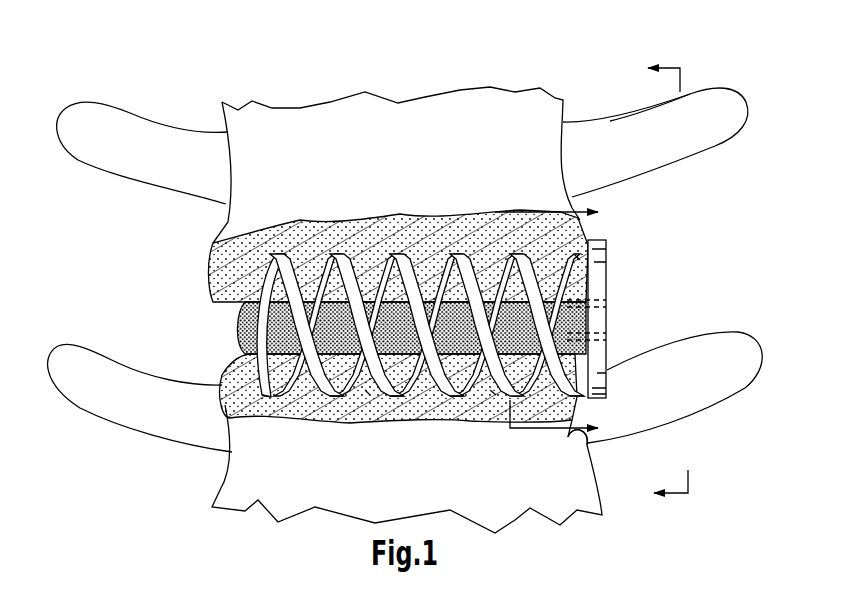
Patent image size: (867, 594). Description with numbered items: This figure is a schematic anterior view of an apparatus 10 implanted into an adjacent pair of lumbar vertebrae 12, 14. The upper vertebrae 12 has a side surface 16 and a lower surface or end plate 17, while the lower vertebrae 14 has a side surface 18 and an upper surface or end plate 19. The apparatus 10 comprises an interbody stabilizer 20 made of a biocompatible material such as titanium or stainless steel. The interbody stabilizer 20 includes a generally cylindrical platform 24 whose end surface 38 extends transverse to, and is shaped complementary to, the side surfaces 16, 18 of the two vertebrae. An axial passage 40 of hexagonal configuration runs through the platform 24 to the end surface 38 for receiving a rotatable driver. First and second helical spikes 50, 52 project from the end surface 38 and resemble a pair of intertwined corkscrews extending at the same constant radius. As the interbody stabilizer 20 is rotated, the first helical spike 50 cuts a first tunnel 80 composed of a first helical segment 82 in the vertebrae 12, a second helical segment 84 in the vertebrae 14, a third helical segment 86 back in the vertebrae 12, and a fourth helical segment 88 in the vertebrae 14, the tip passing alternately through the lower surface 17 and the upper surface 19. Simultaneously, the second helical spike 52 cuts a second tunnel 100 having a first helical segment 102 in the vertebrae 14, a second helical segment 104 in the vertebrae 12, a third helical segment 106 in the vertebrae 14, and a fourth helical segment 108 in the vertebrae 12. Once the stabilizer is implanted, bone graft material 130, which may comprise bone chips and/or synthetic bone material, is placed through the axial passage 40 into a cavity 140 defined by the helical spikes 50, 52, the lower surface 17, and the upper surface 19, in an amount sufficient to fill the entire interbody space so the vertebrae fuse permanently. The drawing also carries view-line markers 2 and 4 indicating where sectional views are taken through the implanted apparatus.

The apparatus 10 is at (500, 272).
The vertebrae 12 is at (568, 100).
The vertebrae 14 is at (604, 492).
The side surface 16 is at (582, 232).
The lower surface 17 is at (350, 420).
The side surface 18 is at (584, 445).
The upper surface 19 is at (292, 242).
The section line 2 is at (658, 283).
The interbody stabilizer 20 is at (498, 272).
The platform 24 is at (605, 266).
The end surface 38 is at (563, 230).
The section line 4 is at (554, 321).
The axial passage 40 is at (594, 318).
The first helical spike 50 is at (323, 236).
The second helical spike 52 is at (336, 420).
The first tunnel 80 is at (363, 236).
The first helical segment 82 is at (557, 244).
The second helical segment 84 is at (493, 423).
The third helical segment 86 is at (445, 232).
The fourth helical segment 88 is at (395, 420).
The second tunnel 100 is at (300, 420).
The first helical segment 102 is at (550, 402).
The second helical segment 104 is at (490, 233).
The third helical segment 106 is at (453, 423).
The fourth helical segment 108 is at (399, 236).
The bone graft material 130 is at (240, 326).
The cavity 140 is at (368, 423).